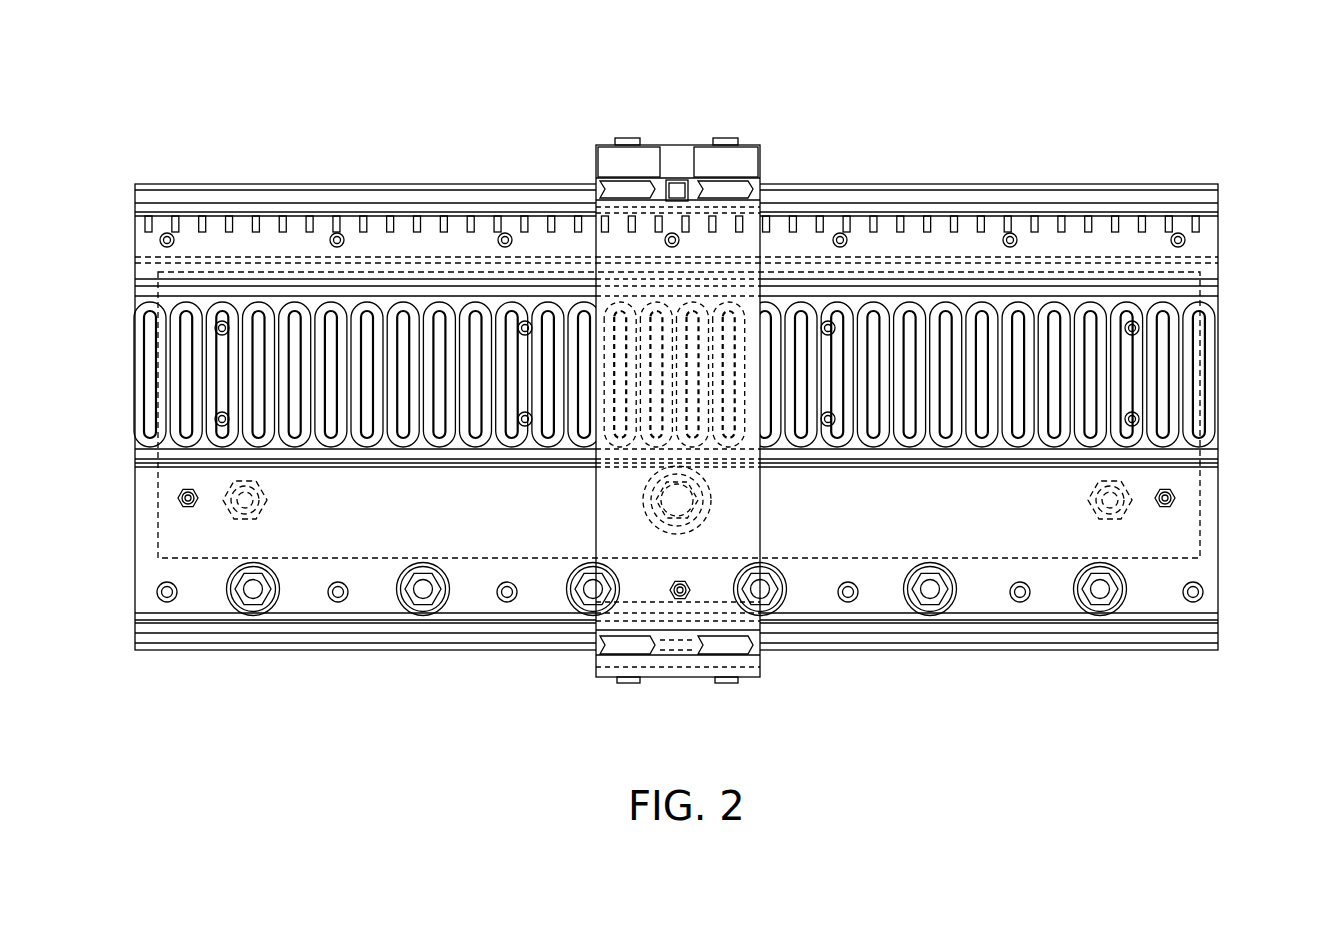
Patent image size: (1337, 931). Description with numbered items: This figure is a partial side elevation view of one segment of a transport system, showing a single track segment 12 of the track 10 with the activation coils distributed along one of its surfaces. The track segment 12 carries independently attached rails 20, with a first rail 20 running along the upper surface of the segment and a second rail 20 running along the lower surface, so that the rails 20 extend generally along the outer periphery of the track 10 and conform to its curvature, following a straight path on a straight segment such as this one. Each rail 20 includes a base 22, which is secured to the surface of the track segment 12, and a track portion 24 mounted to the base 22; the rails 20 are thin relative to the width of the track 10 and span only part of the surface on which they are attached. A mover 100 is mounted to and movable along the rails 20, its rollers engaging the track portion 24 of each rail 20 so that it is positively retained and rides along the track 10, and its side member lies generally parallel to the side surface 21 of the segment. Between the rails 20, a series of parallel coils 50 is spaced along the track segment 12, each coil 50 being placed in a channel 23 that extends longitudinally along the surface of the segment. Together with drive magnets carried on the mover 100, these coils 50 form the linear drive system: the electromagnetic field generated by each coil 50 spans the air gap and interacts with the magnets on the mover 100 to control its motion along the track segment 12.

The track 10 is at (725, 375).
The track segment 12 is at (1232, 246).
The rail 20 is at (676, 419).
The side surface 21 is at (1210, 505).
The base 22 is at (880, 203).
The channel 23 is at (1212, 305).
The track portion 24 is at (930, 190).
The coil 50 is at (1173, 433).
The mover 100 is at (748, 140).